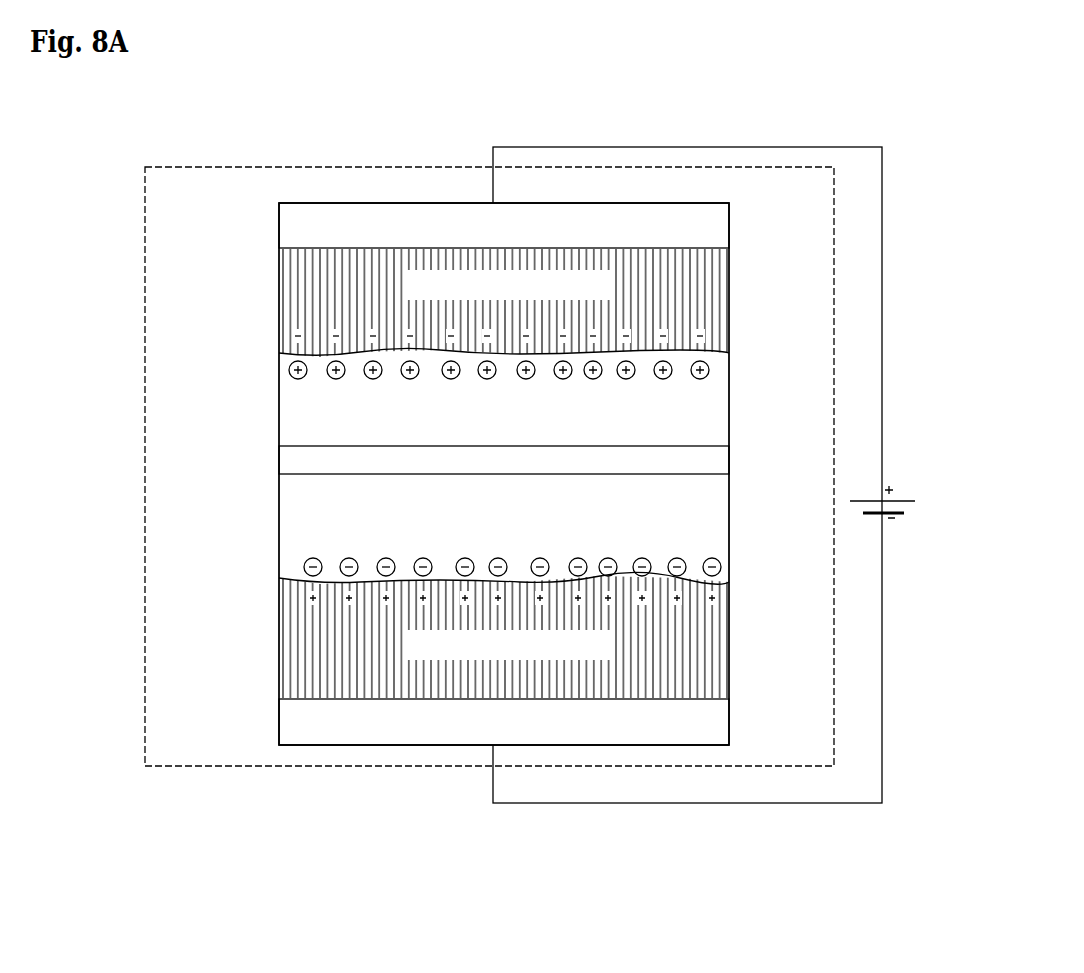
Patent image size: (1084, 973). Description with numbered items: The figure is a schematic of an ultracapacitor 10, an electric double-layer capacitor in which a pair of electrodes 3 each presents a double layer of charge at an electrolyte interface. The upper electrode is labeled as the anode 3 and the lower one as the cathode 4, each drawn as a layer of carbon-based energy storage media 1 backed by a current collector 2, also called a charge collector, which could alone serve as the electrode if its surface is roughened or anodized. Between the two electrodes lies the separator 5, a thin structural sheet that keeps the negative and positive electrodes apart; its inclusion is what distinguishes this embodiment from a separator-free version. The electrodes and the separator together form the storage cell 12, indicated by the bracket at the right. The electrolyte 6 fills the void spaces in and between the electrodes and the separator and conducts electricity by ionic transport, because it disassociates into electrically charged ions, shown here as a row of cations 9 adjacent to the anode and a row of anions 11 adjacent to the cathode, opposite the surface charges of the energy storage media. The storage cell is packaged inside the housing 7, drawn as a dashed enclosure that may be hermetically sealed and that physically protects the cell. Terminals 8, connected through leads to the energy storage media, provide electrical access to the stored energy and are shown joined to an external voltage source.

The energy storage media 1 is at (504, 473).
The current collector 2 is at (504, 474).
The electrode 3 is at (270, 203).
The cathode 4 is at (270, 580).
The separator 5 is at (504, 460).
The electrolyte 6 is at (292, 421).
The housing 7 is at (232, 767).
The terminal 8 is at (592, 147).
The cation 9 is at (296, 372).
The ultracapacitor 10 is at (508, 503).
The anion 11 is at (300, 566).
The storage cell 12 is at (743, 745).